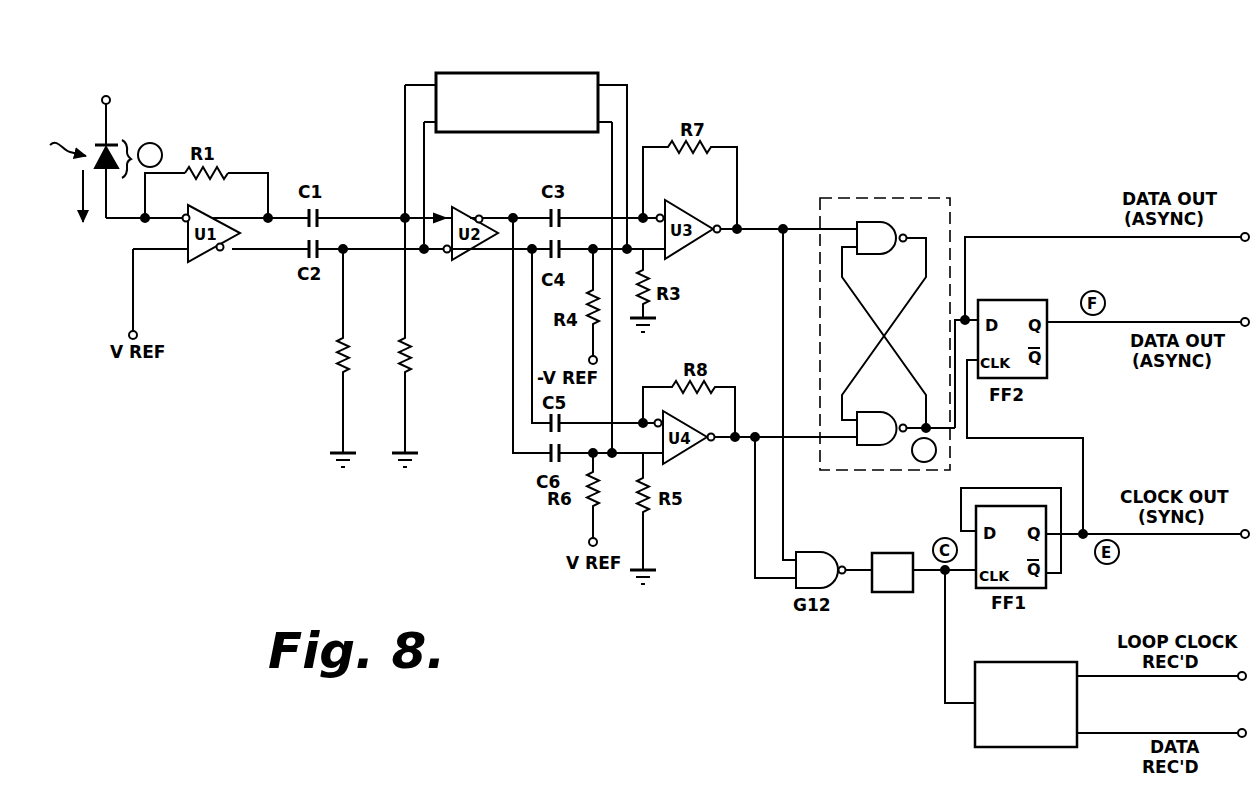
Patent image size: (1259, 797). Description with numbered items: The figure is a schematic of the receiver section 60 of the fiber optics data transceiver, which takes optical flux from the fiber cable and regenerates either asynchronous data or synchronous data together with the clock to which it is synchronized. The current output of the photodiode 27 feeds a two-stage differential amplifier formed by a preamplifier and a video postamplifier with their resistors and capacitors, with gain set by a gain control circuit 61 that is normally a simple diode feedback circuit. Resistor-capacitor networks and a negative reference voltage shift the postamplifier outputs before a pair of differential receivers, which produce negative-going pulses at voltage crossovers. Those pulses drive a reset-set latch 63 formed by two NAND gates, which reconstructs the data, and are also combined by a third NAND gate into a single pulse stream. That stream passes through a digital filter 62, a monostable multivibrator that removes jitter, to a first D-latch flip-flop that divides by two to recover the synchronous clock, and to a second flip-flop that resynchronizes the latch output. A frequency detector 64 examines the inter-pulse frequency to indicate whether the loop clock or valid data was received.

The photodiode 27 is at (127, 130).
The receiver section 60 is at (315, 478).
The gain control circuit 61 is at (526, 72).
The digital filter 62 is at (898, 602).
The reset-set latch 63 is at (900, 197).
The frequency detector 64 is at (965, 736).